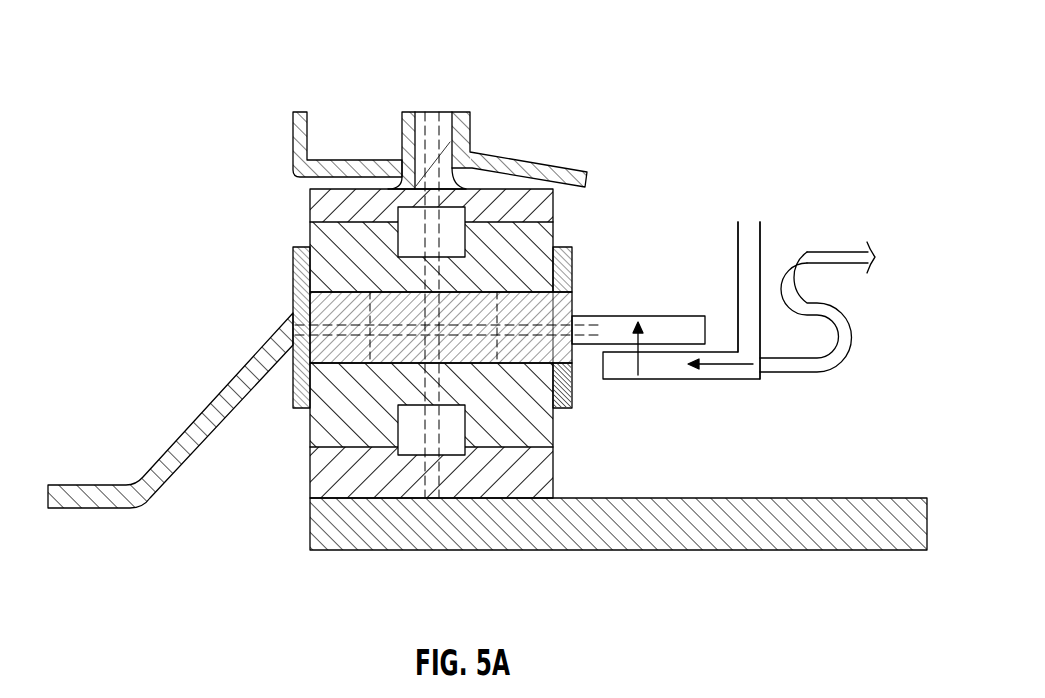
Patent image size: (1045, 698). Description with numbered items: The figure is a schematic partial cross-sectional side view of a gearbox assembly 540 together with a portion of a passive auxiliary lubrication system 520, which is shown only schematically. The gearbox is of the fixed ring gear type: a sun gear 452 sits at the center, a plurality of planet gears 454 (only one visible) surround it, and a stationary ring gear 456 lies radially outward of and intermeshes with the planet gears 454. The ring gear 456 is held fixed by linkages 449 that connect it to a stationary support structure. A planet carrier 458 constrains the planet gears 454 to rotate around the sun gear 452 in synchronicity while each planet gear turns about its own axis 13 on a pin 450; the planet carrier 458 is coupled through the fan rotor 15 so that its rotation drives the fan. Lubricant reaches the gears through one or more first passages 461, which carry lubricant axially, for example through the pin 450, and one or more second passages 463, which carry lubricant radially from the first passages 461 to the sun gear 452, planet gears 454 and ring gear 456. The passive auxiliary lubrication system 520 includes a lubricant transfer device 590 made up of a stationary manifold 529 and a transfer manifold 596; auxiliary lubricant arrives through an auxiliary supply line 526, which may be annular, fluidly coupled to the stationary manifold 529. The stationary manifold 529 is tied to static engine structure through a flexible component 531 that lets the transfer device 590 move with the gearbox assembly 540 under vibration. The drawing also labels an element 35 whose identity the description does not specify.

The axis 13 is at (572, 378).
The fan rotor 15 is at (65, 485).
The base plate 35 is at (845, 550).
The linkages 449 is at (405, 110).
The pin 450 is at (306, 291).
The sun gear 452 is at (310, 467).
The planet gears 454 is at (310, 228).
The ring gear 456 is at (377, 188).
The planet carrier 458 is at (293, 303).
The first passages 461 is at (513, 320).
The second passages 463 is at (453, 190).
The passive auxiliary lubrication system 520 is at (772, 259).
The auxiliary supply line 526 is at (764, 248).
The stationary manifold 529 is at (735, 379).
The flexible component 531 is at (850, 335).
The gearbox assembly 540 is at (377, 99).
The lubricant transfer device 590 is at (722, 168).
The transfer manifold 596 is at (673, 316).